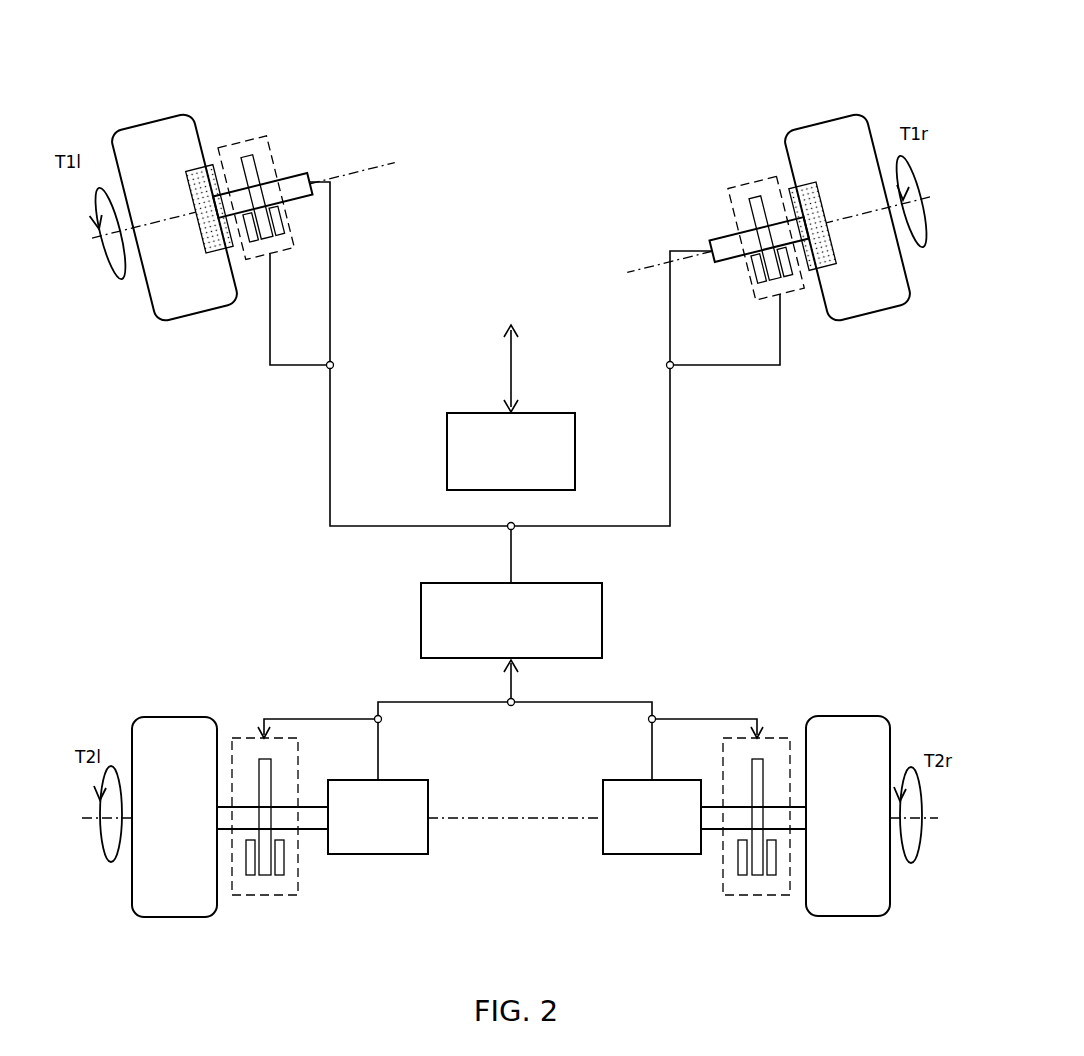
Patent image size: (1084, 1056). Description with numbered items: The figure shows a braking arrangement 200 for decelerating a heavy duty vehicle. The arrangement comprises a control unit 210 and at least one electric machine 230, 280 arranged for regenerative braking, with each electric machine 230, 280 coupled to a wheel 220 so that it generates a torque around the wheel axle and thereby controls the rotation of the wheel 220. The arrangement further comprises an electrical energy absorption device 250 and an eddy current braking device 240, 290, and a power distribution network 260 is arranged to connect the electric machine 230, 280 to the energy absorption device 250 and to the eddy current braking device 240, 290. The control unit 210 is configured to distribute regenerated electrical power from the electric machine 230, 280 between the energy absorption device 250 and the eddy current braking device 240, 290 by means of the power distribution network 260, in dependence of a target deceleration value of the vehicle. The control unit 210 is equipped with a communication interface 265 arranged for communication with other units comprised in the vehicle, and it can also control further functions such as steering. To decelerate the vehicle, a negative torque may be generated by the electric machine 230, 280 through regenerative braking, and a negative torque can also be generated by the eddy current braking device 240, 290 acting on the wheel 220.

The braking arrangement 200 is at (121, 49).
The control unit 210 is at (511, 451).
The wheel 220 is at (511, 514).
The electric machine 230 is at (514, 817).
The eddy current braking device 240 is at (281, 896).
The electrical energy absorption device 250 is at (511, 620).
The power distribution network 260 is at (519, 481).
The communication interface 265 is at (531, 368).
The electric machine 280 is at (216, 253).
The eddy current braking device 290 is at (250, 140).